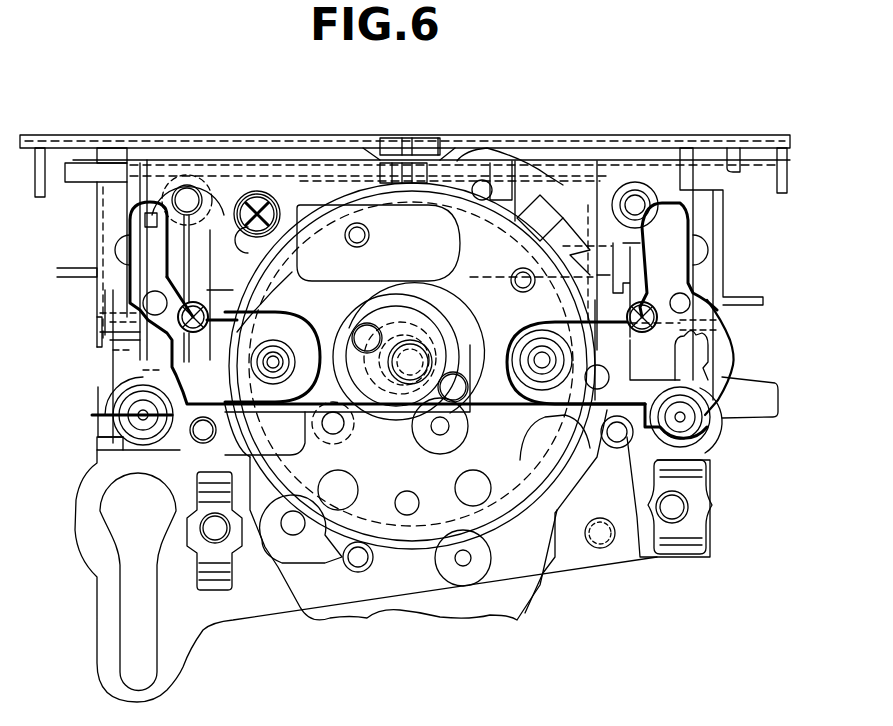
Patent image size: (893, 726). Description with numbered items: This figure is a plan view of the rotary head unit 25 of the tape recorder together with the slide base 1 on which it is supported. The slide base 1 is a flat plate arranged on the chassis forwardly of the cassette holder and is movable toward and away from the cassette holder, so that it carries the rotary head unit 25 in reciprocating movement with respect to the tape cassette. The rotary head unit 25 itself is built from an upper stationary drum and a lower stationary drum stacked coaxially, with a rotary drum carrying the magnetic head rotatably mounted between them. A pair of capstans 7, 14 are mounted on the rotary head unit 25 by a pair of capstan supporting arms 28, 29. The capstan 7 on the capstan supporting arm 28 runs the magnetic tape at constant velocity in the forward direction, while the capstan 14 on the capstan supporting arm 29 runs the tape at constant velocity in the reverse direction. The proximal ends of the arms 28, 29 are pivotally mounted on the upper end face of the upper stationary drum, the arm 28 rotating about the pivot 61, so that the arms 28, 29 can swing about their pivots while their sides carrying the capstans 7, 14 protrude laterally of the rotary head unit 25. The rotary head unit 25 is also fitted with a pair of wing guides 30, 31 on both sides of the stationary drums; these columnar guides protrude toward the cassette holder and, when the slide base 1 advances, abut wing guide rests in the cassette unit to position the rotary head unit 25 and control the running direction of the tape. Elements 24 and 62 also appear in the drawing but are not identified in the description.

The slide base 1 is at (520, 597).
The capstan 7 is at (135, 418).
The capstan 14 is at (690, 422).
The lower bracket 24 is at (90, 480).
The rotary head unit 25 is at (472, 256).
The capstan supporting arm 28 is at (135, 287).
The capstan supporting arm 29 is at (737, 340).
The wing guide 30 is at (617, 437).
The wing guide 31 is at (203, 437).
The pivot 61 is at (277, 360).
The right fixing portion 62 is at (556, 345).